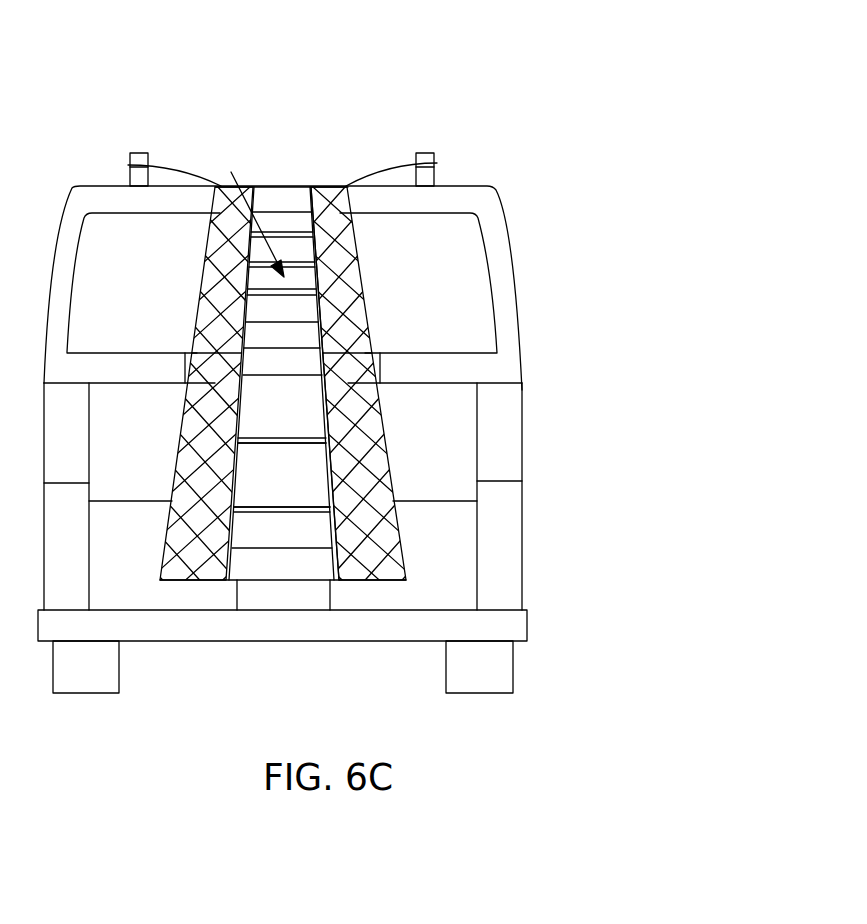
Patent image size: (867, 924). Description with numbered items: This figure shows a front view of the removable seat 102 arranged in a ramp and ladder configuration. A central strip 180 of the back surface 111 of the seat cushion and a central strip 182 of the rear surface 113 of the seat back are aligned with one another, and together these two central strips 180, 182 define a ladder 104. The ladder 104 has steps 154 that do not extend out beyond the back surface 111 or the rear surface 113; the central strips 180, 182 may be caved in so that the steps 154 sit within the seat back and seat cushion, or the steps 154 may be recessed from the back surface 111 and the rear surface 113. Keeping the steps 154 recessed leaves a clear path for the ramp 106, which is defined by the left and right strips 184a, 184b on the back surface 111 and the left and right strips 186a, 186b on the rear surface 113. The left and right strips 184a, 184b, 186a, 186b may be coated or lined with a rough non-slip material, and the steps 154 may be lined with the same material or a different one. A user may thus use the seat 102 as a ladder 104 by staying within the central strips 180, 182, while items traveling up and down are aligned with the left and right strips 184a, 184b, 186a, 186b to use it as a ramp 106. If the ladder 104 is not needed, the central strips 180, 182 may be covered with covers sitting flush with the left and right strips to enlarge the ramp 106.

The seat 102 is at (348, 83).
The ladder 104 is at (310, 158).
The ramp 106 is at (158, 593).
The back surface 111 is at (352, 327).
The rear surface 113 is at (387, 555).
The steps 154 is at (307, 293).
The central strip 180 is at (249, 208).
The central strip 182 is at (283, 490).
The left strip 184a is at (203, 287).
The right strip 184b is at (363, 287).
The left strip 186a is at (182, 440).
The right strip 186b is at (390, 460).